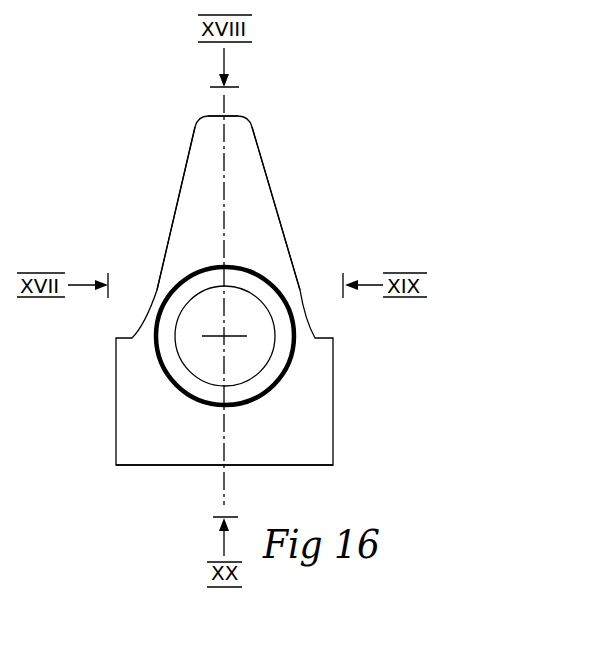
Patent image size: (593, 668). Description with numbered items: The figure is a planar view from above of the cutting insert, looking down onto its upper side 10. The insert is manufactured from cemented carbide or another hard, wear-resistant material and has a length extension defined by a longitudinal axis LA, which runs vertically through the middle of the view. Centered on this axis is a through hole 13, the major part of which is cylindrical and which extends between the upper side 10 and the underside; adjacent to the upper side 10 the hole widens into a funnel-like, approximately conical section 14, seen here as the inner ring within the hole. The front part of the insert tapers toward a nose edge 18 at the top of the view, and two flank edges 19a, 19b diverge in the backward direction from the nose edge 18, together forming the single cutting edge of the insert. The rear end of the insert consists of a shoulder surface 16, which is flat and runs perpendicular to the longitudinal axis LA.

The upper side 10 is at (283, 439).
The through hole 13 is at (282, 282).
The conical section 14 is at (173, 370).
The shoulder surface 16 is at (167, 468).
The nose edge 18 is at (228, 116).
The flank edge 19a is at (175, 212).
The flank edge 19b is at (275, 205).
The longitudinal axis LA is at (225, 181).